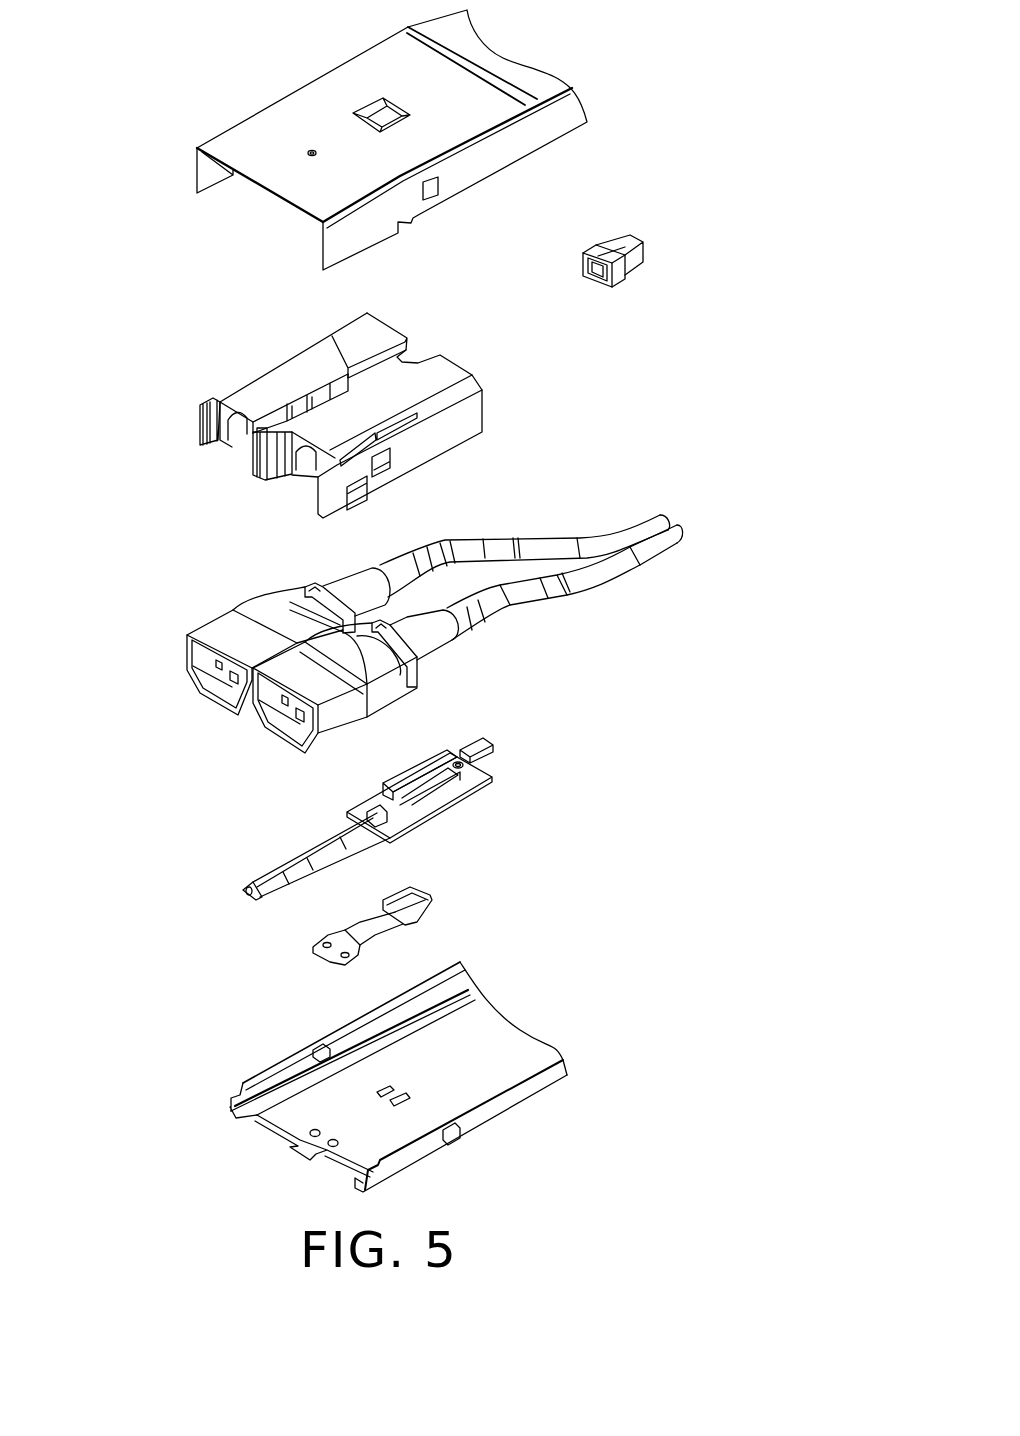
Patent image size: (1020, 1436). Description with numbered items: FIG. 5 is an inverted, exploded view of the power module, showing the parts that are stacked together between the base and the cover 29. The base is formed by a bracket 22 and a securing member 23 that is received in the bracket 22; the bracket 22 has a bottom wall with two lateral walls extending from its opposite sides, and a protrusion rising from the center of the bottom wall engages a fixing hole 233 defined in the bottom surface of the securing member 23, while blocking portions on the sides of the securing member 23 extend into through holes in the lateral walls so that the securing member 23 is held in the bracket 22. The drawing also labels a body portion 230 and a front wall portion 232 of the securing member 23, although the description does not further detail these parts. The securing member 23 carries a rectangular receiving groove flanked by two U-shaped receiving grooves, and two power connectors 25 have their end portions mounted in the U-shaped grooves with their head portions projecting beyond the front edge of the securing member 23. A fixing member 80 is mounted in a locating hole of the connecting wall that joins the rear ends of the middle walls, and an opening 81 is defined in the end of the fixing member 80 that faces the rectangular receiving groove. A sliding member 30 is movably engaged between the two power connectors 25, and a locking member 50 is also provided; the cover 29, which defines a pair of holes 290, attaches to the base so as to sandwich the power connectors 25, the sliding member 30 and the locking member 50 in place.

The bracket 22 is at (296, 118).
The securing member 23 is at (366, 397).
The housing body 230 is at (388, 397).
The front wall 232 is at (452, 428).
The fixing hole 233 is at (338, 395).
The power connector 25 is at (247, 582).
The cover 29 is at (412, 1077).
The holes 290 is at (383, 1087).
The sliding member 30 is at (477, 788).
The locking member 50 is at (420, 915).
The fixing member 80 is at (608, 249).
The opening 81 is at (586, 276).